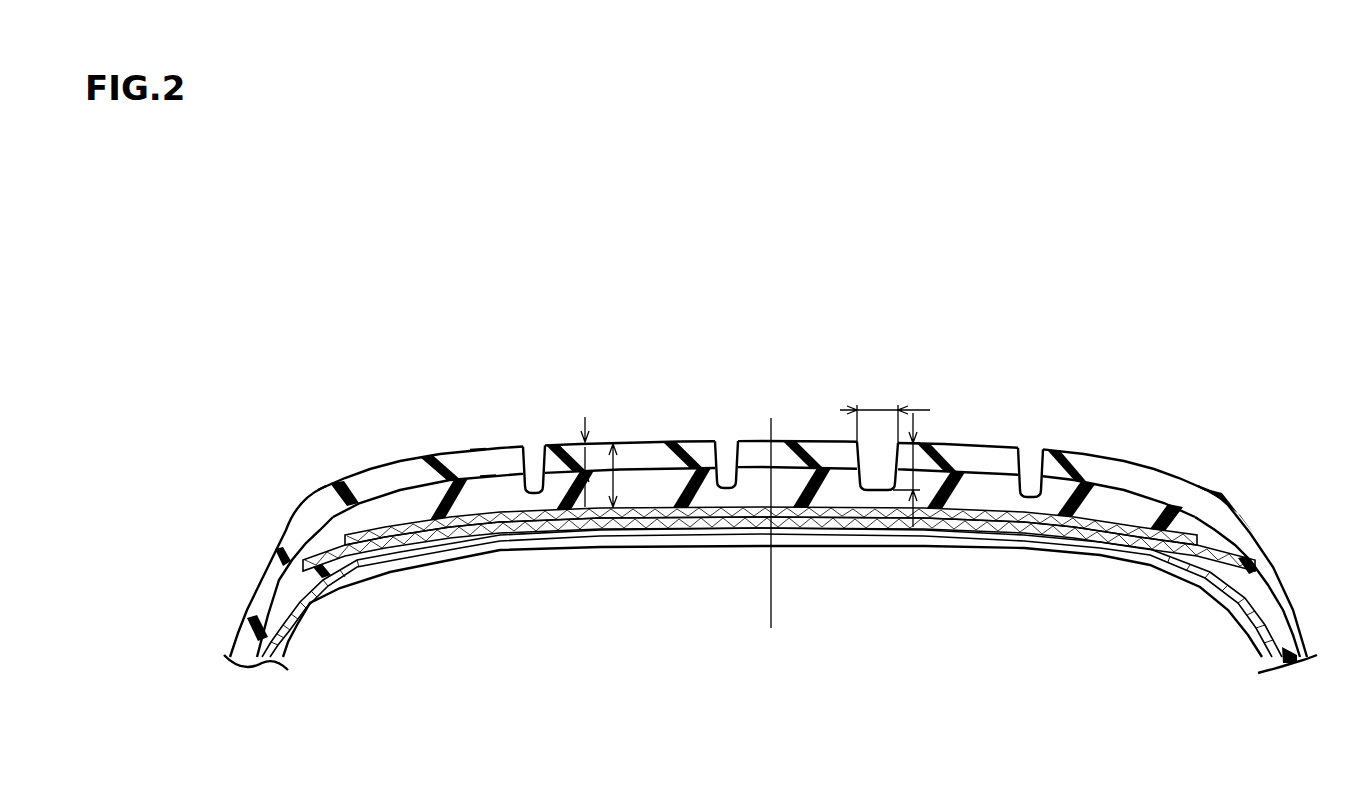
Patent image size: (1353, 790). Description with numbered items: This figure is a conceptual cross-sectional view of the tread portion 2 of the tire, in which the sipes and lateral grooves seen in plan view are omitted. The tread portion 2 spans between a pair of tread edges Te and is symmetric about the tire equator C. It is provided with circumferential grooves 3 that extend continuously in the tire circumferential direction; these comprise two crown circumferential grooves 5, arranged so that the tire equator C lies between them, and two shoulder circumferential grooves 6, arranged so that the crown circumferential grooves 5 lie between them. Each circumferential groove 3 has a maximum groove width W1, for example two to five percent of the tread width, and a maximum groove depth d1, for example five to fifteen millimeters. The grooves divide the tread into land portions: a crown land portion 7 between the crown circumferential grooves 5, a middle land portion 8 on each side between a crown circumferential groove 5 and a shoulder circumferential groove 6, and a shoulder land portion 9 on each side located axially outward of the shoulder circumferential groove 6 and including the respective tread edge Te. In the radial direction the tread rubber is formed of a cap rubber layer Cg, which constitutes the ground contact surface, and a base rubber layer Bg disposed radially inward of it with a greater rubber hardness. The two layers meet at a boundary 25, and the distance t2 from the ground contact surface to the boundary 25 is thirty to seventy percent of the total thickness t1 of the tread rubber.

The tread portion 2 is at (1140, 292).
The circumferential grooves 3 is at (868, 484).
The crown circumferential grooves 5 is at (722, 452).
The shoulder circumferential grooves 6 is at (527, 470).
The crown land portion 7 is at (800, 427).
The middle land portions 8 is at (645, 427).
The shoulder land portions 9 is at (391, 456).
The boundary 25 is at (382, 502).
The tread edges Te is at (310, 498).
The cap rubber layer Cg is at (477, 463).
The base rubber layer Bg is at (488, 495).
The tire equator C is at (770, 510).
The maximum groove width W1 is at (885, 410).
The maximum groove depth d1 is at (916, 476).
The total thickness of the tread rubber t1 is at (613, 452).
The distance to the boundary t2 is at (584, 456).